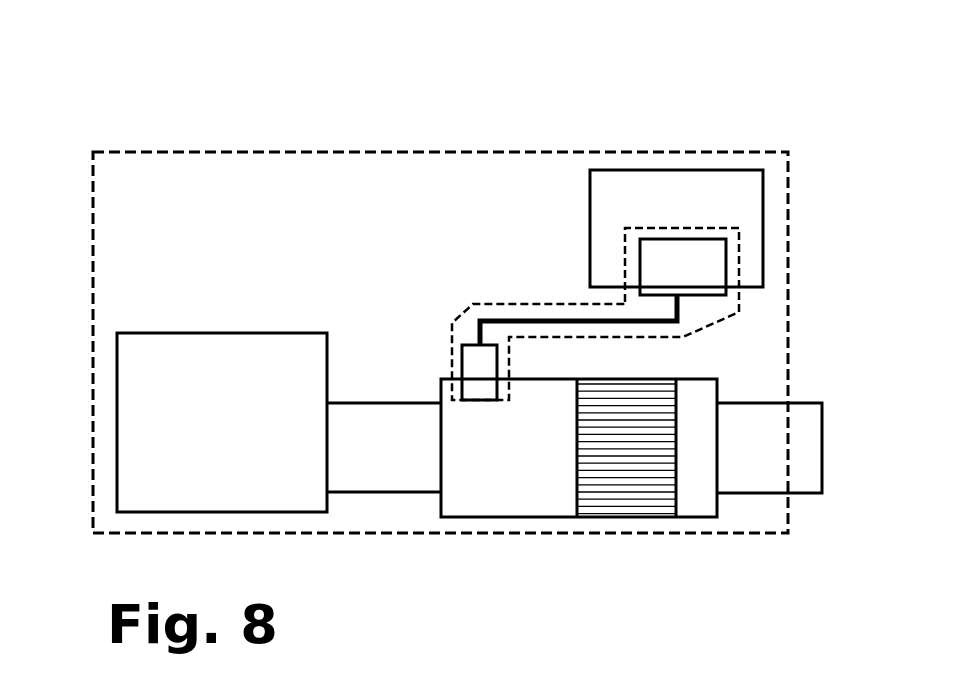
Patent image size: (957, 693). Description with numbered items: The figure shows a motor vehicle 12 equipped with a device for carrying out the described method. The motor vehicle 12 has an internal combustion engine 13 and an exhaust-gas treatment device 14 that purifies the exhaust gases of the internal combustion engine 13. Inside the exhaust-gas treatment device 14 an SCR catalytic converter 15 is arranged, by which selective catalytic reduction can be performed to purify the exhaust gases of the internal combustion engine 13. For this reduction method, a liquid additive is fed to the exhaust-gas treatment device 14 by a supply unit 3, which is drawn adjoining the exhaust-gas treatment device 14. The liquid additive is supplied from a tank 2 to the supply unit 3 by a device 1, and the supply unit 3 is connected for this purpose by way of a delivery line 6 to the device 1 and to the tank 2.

The device 1 is at (627, 260).
The tank 2 is at (590, 186).
The supply unit 3 is at (462, 345).
The delivery line 6 is at (501, 321).
The motor vehicle 12 is at (798, 136).
The internal combustion engine 13 is at (232, 333).
The exhaust-gas treatment device 14 is at (441, 380).
The SCR catalytic converter 15 is at (577, 493).